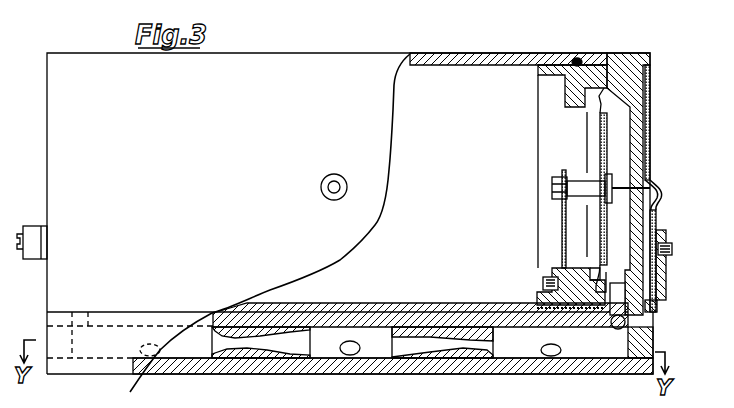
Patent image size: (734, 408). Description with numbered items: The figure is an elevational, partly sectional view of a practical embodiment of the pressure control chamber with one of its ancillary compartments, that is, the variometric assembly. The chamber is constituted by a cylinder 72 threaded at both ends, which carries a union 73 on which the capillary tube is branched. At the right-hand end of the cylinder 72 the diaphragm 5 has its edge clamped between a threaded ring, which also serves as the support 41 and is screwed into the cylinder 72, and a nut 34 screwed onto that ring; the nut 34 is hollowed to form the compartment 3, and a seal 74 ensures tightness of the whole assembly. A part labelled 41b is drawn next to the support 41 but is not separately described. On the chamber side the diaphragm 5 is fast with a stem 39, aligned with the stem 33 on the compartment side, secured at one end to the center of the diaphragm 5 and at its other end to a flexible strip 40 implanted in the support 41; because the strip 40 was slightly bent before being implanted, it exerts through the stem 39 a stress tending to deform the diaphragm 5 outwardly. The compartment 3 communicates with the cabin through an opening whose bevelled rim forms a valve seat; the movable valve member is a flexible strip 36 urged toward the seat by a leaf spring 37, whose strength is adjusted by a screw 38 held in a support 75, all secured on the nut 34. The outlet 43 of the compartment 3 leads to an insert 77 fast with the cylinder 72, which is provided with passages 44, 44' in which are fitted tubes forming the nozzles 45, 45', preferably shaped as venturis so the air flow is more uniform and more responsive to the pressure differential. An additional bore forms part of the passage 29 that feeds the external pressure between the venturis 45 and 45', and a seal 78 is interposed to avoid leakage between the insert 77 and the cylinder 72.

The cylinder 72 is at (478, 60).
The seal 74 is at (577, 58).
The nut 34 is at (632, 88).
The flexible strip 36 is at (648, 128).
The union 73 is at (334, 174).
The diaphragm 5 is at (600, 130).
The compartment 3 is at (622, 232).
The stem 39 is at (576, 180).
The stem 33 is at (662, 192).
The leaf spring 37 is at (655, 216).
The flexible strip 40 is at (562, 235).
The support 41 is at (562, 262).
The flange 41b is at (552, 268).
The screw 38 is at (667, 258).
The support 75 is at (658, 302).
The seal 78 is at (651, 323).
The insert 77 is at (170, 360).
The passage 44' is at (401, 355).
The nozzle 45' is at (261, 303).
The nozzle 45 is at (442, 310).
The passage 29 is at (347, 356).
The passage 44 is at (548, 376).
The outlet 43 is at (617, 329).